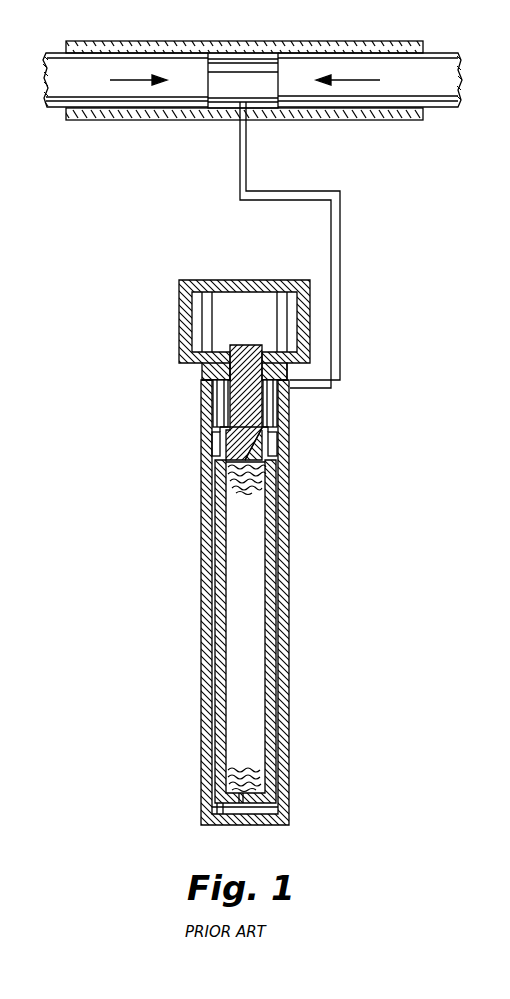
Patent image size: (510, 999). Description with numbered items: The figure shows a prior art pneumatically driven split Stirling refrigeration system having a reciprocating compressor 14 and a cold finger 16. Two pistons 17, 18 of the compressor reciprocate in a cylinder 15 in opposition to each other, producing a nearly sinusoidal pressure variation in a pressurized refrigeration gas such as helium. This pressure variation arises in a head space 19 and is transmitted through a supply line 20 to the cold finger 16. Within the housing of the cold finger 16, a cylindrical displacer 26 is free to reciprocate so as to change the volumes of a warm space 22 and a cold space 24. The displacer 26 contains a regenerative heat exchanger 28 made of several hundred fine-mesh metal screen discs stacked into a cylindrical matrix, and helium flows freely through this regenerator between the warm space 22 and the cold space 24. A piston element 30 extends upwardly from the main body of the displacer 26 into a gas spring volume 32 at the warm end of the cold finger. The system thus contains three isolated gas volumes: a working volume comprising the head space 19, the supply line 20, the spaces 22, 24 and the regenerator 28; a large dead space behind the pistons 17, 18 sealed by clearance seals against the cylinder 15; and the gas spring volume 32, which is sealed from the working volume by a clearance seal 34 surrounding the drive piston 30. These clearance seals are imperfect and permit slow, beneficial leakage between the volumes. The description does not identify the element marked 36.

The reciprocating compressor 14 is at (170, 135).
The cylinder 15 is at (250, 42).
The cold finger 16 is at (201, 686).
The piston 17 is at (177, 62).
The piston 18 is at (363, 60).
The head space 19 is at (233, 90).
The supply line 20 is at (331, 240).
The warm space 22 is at (270, 407).
The cold space 24 is at (265, 809).
The cylindrical displacer 26 is at (220, 505).
The regenerative heat exchanger 28 is at (252, 493).
The piston element 30 is at (240, 397).
The gas spring volume 32 is at (202, 315).
The clearance seal 34 is at (230, 358).
The plug 36 is at (213, 443).